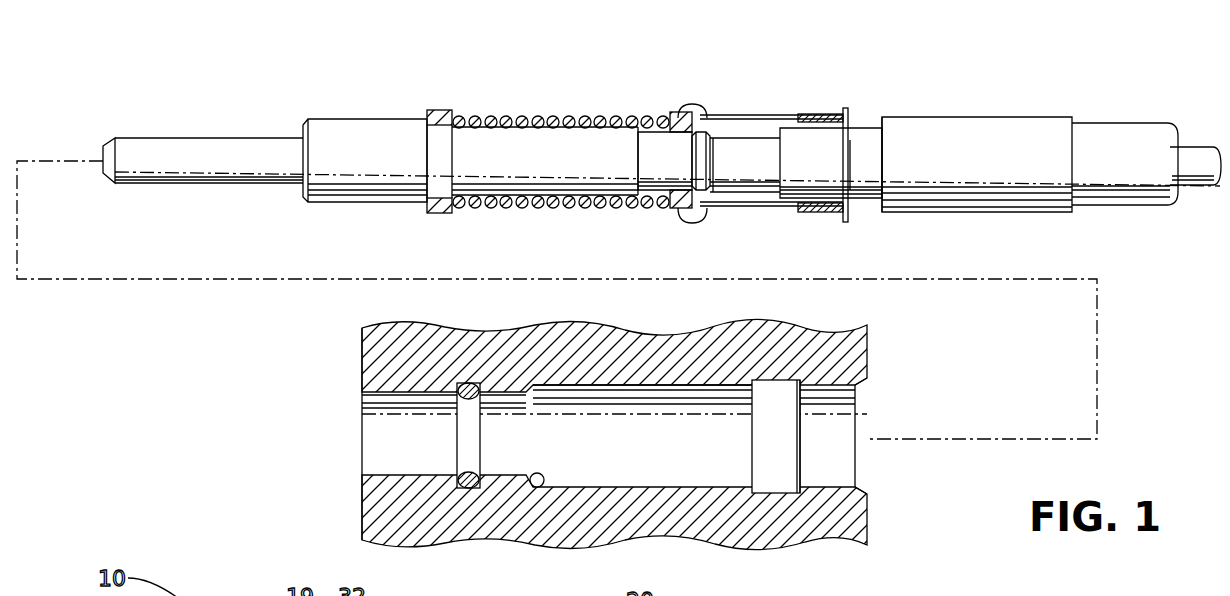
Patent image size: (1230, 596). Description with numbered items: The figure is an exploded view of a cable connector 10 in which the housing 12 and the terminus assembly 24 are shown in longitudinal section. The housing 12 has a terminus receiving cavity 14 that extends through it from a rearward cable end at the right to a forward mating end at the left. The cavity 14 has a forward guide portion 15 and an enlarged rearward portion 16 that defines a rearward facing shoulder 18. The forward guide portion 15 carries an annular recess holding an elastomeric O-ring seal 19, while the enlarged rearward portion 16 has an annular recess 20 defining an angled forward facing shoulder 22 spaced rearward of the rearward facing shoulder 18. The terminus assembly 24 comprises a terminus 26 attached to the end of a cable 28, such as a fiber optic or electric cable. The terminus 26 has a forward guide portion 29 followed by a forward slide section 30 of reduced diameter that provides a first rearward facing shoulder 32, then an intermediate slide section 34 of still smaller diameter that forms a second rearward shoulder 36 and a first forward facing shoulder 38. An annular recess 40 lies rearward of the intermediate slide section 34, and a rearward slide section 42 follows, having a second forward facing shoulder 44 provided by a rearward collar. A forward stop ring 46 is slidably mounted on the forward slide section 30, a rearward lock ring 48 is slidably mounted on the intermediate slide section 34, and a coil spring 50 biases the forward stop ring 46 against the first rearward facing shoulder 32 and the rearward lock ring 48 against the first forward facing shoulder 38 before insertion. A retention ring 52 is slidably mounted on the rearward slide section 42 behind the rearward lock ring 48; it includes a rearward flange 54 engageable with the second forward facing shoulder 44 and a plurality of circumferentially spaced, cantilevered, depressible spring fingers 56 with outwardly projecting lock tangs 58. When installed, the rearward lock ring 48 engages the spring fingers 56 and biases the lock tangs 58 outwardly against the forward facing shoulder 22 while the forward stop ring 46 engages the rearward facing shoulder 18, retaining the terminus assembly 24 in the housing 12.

The cable connector 10 is at (216, 356).
The housing 12 is at (368, 510).
The terminus receiving cavity 14 is at (500, 400).
The forward guide portion 15 is at (368, 400).
The enlarged rearward portion 16 is at (640, 395).
The rearward facing shoulder 18 is at (537, 490).
The O-ring seal 19 is at (462, 385).
The annular recess 20 is at (768, 390).
The forward facing shoulder 22 is at (790, 480).
The terminus assembly 24 is at (920, 106).
The terminus 26 is at (1017, 128).
The cable 28 is at (1196, 155).
The forward guide portion 29 is at (368, 133).
The forward slide section 30 is at (517, 140).
The first rearward facing shoulder 32 is at (428, 115).
The intermediate slide section 34 is at (678, 118).
The second rearward shoulder 36 is at (650, 150).
The first forward facing shoulder 38 is at (690, 140).
The annular recess 40 is at (745, 178).
The rearward slide section 42 is at (862, 190).
The second forward facing shoulder 44 is at (878, 140).
The forward stop ring 46 is at (428, 210).
The rearward lock ring 48 is at (670, 208).
The coil spring 50 is at (535, 208).
The retention ring 52 is at (818, 212).
The rearward flange 54 is at (835, 112).
The spring fingers 56 is at (760, 116).
The lock tangs 58 is at (695, 222).